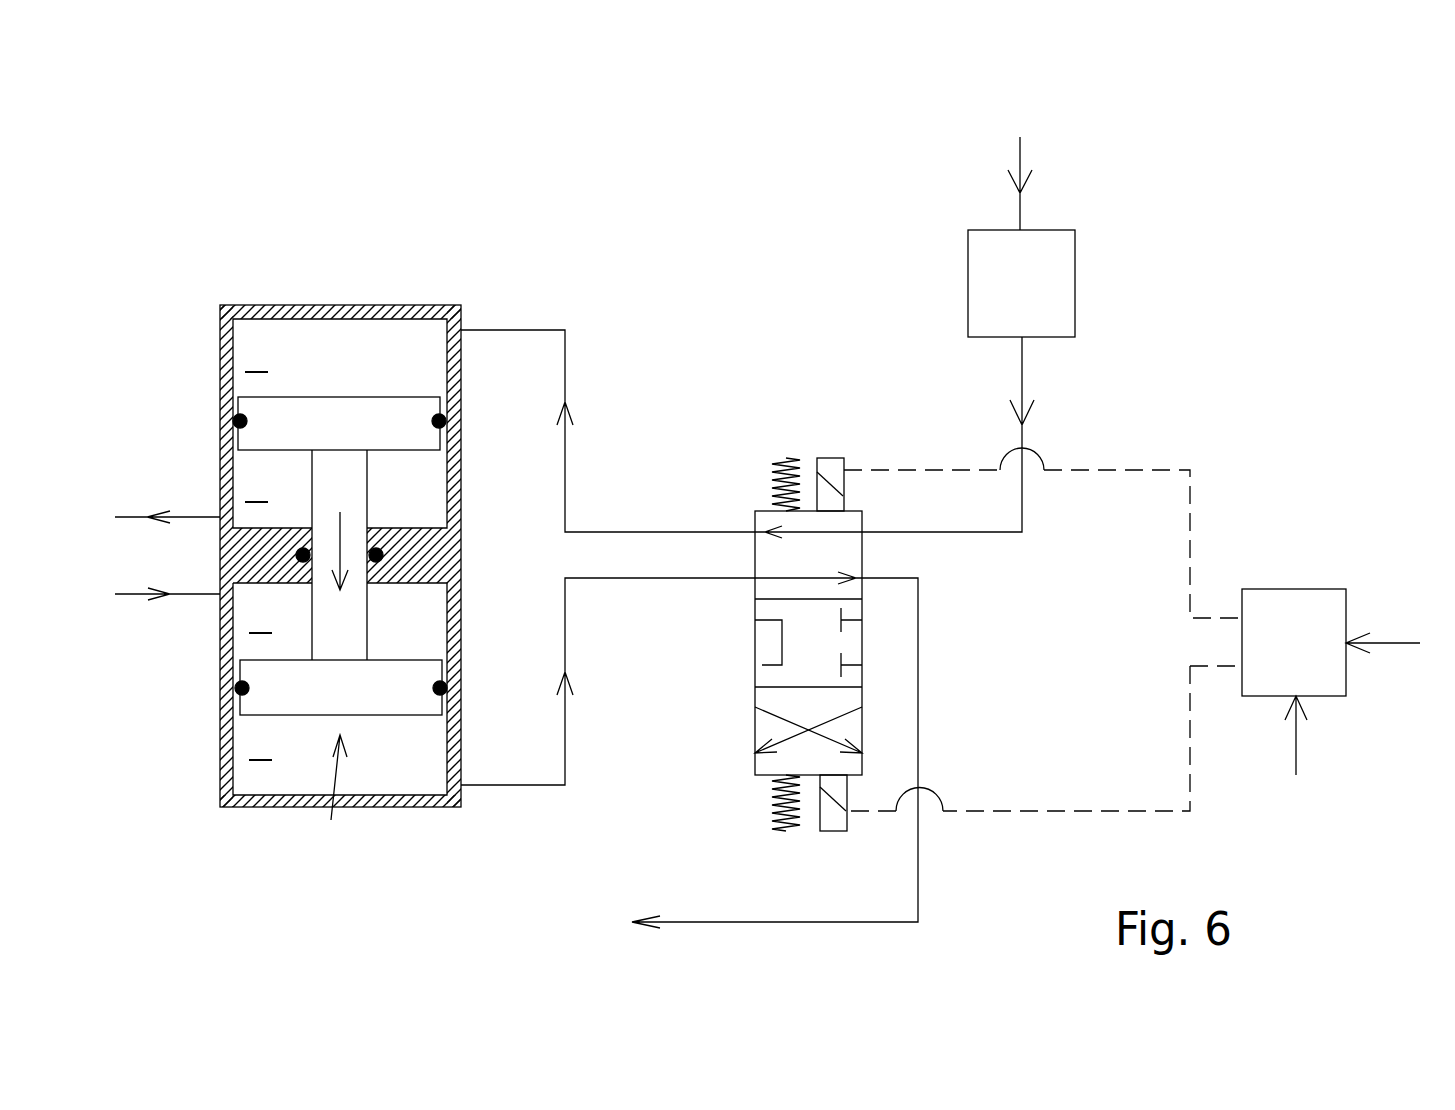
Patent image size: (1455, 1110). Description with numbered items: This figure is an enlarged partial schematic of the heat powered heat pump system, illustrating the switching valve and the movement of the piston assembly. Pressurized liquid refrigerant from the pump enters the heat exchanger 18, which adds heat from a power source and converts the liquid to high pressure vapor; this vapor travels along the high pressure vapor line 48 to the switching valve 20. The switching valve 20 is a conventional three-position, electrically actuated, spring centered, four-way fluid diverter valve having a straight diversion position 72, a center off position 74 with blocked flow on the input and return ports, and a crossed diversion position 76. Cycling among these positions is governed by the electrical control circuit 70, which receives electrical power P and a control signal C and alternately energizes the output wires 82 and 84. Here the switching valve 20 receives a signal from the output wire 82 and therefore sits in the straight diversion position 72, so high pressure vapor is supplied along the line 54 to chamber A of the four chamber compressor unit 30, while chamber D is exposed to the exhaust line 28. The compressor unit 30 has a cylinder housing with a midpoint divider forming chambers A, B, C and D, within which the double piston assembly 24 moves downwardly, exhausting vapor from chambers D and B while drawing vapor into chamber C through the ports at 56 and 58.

The heat exchanger 18 is at (1075, 253).
The switching valve 20 is at (748, 445).
The double piston assembly 24 is at (331, 820).
The exhaust line 28 is at (484, 788).
The four chamber compressor unit 30 is at (328, 280).
The high pressure vapor line 48 is at (1022, 386).
The line 54 is at (565, 360).
The inlet port 56 is at (195, 596).
The outlet port 58 is at (185, 515).
The electrical control circuit 70 is at (1318, 589).
The straight diversion position 72 is at (755, 518).
The center off position 74 is at (755, 641).
The crossed diversion position 76 is at (755, 740).
The output wire 82 is at (1090, 468).
The output wire 84 is at (1100, 812).